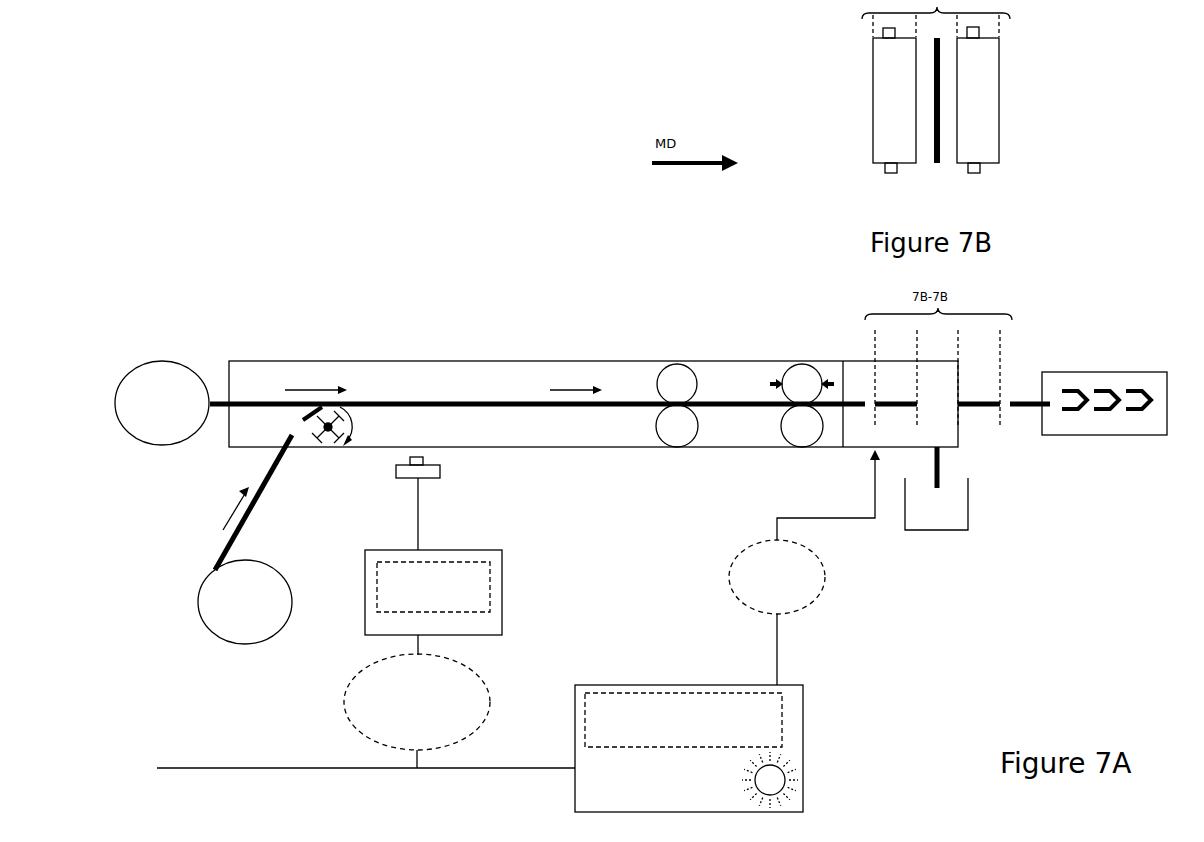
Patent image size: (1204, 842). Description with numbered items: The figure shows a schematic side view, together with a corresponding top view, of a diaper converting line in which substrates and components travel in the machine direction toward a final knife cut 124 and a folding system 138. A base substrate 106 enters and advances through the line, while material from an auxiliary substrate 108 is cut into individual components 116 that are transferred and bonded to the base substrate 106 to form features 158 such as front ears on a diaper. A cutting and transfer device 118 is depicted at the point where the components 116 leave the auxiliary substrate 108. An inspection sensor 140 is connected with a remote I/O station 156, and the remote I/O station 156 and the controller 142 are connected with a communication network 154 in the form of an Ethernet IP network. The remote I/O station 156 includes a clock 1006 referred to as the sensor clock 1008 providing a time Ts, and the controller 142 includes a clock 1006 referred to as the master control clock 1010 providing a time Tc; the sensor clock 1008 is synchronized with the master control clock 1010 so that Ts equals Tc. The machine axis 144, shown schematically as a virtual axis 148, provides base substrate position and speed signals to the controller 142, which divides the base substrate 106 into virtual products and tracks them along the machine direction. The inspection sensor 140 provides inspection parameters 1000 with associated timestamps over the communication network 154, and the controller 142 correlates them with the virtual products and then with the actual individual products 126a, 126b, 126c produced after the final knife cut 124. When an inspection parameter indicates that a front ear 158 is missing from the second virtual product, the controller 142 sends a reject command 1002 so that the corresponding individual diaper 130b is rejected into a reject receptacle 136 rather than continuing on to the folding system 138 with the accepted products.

In FIG. 7A, the base substrate 106 is at (215, 400).
In FIG. 7A, the auxiliary substrate 108 is at (212, 615).
In FIG. 7A, the components 116 is at (300, 414).
In FIG. 7A, the rotary cutter 118 is at (332, 445).
In FIG. 7A, the final knife cut 124 is at (798, 382).
In FIG. 7A, the individual product 126a is at (975, 400).
In FIG. 7B, the individual product 126a is at (985, 124).
In FIG. 7A, the individual product 126b is at (945, 468).
In FIG. 7B, the individual product 126b is at (940, 170).
In FIG. 7A, the individual product 126c is at (870, 397).
In FIG. 7B, the individual product 126c is at (880, 138).
In FIG. 7A, the individual diaper 130b is at (991, 472).
In FIG. 7B, the individual diaper 130b is at (1000, 126).
In FIG. 7A, the reject bin 136 is at (968, 520).
In FIG. 7A, the folding system 138 is at (1068, 433).
In FIG. 7A, the inspection sensor 140 is at (432, 476).
In FIG. 7A, the controller 142 is at (708, 749).
In FIG. 7A, the machine axis 144 is at (814, 780).
In FIG. 7A, the virtual axis 148 is at (780, 781).
In FIG. 7A, the communication network 154 is at (415, 647).
In FIG. 7A, the remote I/O station 156 is at (494, 586).
In FIG. 7B, the features 158 is at (885, 31).
In FIG. 7A, the inspection parameters 1000 is at (345, 712).
In FIG. 7A, the reject command 1002 is at (808, 603).
In FIG. 7A, the clock 1006 is at (500, 587).
In FIG. 7A, the sensor clock 1008 is at (502, 597).
In FIG. 7A, the master control clock 1010 is at (783, 723).